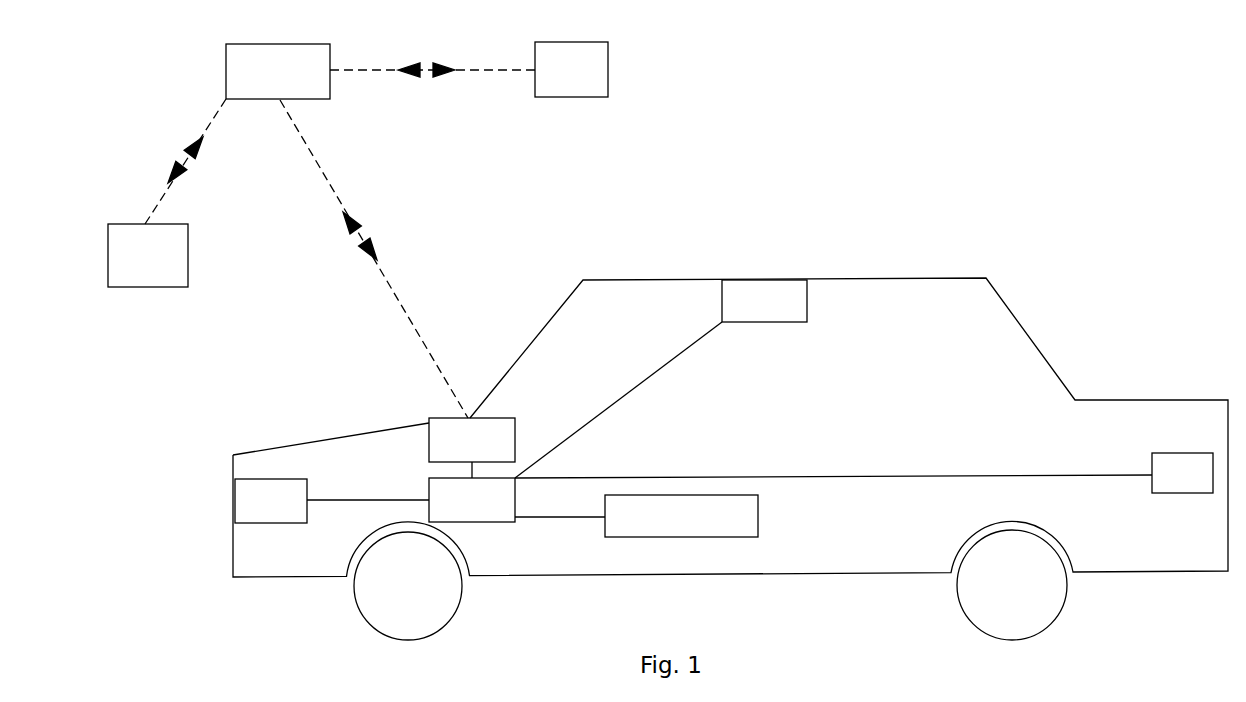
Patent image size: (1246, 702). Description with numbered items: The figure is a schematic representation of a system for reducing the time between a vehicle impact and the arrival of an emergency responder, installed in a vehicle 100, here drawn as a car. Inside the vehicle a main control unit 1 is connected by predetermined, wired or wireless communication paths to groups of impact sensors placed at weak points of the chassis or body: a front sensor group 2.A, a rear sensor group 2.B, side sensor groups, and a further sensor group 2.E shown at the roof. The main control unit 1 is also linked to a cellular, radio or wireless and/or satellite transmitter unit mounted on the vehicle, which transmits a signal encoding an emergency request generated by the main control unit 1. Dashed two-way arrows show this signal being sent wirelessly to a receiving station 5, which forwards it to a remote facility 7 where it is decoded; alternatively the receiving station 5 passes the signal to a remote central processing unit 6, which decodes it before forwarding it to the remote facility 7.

The vehicle 100 is at (991, 274).
The main control unit 1 is at (472, 492).
The front sensor group 2.A is at (332, 501).
The rear sensor group 2.B is at (864, 473).
The sensor group 2.E is at (661, 379).
The receiving station 5 is at (340, 231).
The remote central processing unit 6 is at (148, 255).
The remote facility 7 is at (571, 69).